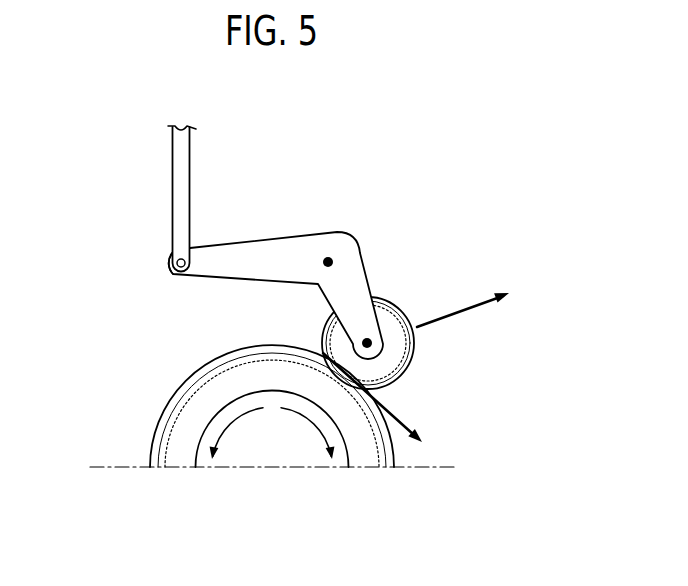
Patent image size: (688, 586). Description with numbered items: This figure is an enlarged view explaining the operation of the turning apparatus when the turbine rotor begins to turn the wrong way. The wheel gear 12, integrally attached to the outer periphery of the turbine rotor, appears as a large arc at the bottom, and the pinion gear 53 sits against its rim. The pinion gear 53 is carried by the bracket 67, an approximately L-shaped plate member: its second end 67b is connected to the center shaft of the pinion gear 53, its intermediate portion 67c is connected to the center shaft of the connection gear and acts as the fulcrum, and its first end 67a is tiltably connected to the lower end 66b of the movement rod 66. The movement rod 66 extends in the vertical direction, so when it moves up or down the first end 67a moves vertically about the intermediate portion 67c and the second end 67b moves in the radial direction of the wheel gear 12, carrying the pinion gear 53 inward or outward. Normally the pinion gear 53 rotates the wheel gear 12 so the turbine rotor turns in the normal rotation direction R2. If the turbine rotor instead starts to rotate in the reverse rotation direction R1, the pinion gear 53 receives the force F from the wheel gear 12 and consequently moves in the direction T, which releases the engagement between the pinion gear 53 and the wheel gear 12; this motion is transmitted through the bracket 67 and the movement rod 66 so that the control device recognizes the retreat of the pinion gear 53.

The wheel gear 12 is at (188, 424).
The pinion gear 53 is at (389, 320).
The movement rod 66 is at (182, 163).
The lower end 66b is at (178, 268).
The bracket 67 is at (231, 270).
The first end 67a is at (166, 256).
The second end 67b is at (372, 346).
The intermediate portion 67c is at (328, 257).
The direction T is at (458, 313).
The force F is at (396, 416).
The reverse rotation direction R1 is at (240, 420).
The normal rotation direction R2 is at (300, 420).